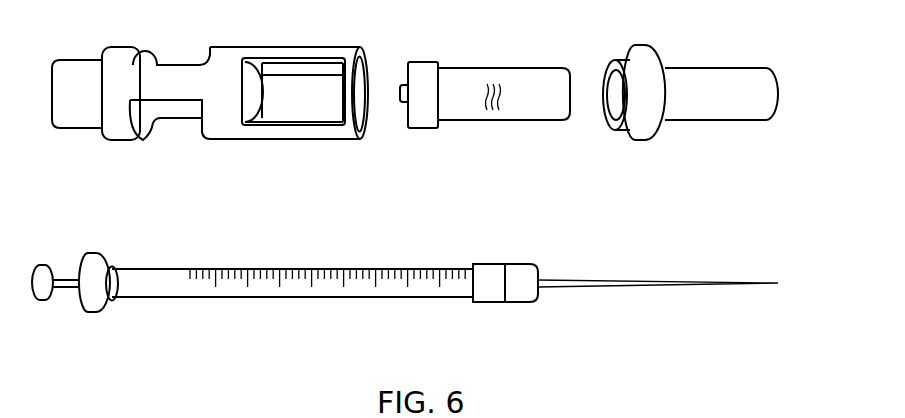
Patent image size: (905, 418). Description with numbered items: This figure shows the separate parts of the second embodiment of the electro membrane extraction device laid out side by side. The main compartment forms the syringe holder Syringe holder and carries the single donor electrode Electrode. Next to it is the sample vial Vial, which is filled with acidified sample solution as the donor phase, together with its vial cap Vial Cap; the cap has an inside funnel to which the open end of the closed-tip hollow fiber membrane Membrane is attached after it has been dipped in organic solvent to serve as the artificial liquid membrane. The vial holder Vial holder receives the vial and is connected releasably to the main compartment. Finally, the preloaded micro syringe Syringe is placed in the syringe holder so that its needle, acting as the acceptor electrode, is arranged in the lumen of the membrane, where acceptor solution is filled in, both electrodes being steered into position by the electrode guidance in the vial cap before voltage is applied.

The syringe holder Syringe holder is at (78, 108).
The electrode Electrode is at (187, 37).
The vial cap Vial Cap is at (452, 32).
The vial Vial is at (467, 120).
The membrane Membrane is at (527, 107).
The vial holder Vial holder is at (707, 105).
The syringe Syringe is at (435, 288).